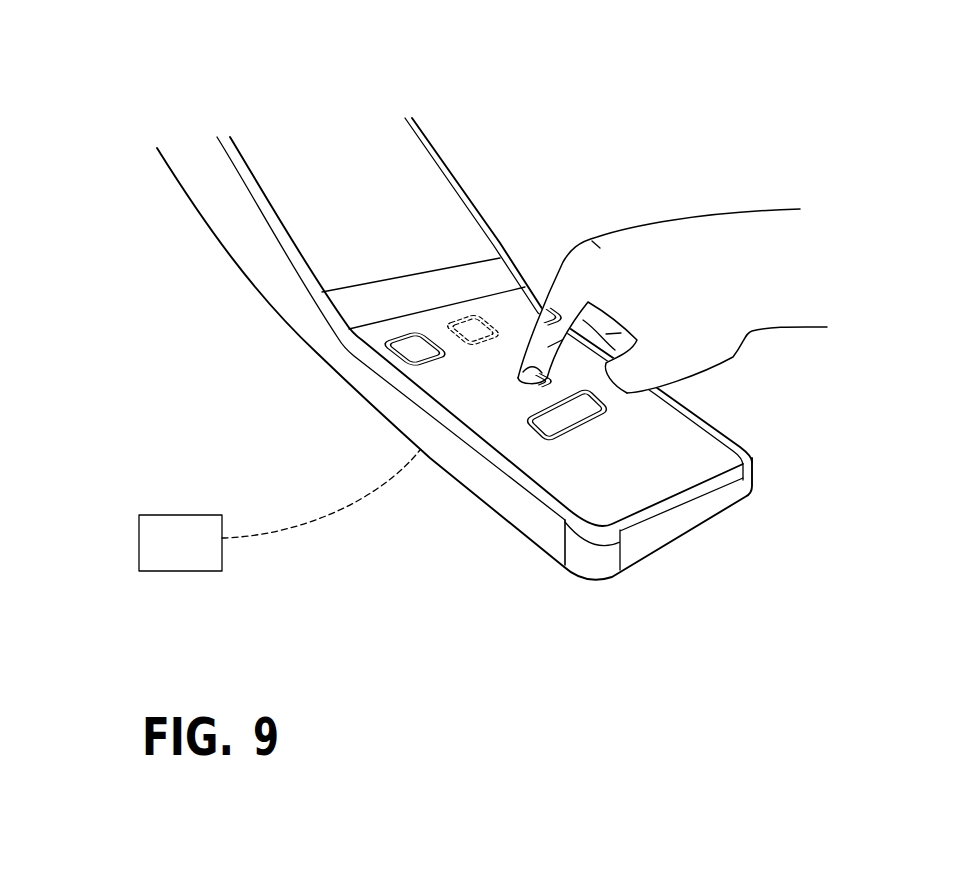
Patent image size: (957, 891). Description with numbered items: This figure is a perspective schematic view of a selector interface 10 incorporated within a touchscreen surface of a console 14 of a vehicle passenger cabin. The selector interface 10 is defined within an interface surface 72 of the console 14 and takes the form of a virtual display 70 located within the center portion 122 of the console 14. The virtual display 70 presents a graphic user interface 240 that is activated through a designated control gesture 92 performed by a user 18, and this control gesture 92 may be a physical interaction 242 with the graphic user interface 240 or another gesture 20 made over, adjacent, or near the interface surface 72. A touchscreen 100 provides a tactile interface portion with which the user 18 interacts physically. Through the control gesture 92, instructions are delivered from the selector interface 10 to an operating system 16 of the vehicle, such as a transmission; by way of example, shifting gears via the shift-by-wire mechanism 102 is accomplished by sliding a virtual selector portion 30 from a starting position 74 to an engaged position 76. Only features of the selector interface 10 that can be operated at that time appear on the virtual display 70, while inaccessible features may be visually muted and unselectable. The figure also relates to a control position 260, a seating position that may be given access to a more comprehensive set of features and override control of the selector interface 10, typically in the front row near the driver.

The selector interface 10 is at (563, 200).
The console 14 is at (222, 251).
The operating system 16 is at (135, 542).
The user 18 is at (720, 212).
The gesture 20 is at (753, 373).
The virtual selector portion 30 is at (372, 371).
The virtual display 70 is at (450, 402).
The interface surface 72 is at (405, 244).
The starting position 74 is at (478, 312).
The engaged position 76 is at (510, 393).
The designated control gesture 92 is at (562, 318).
The touchscreen 100 is at (567, 463).
The shift-by-wire mechanism 102 is at (177, 515).
The center portion 122 is at (390, 141).
The graphic user interface 240 is at (413, 317).
The physical interaction 242 is at (562, 372).
The control position 260 is at (318, 122).